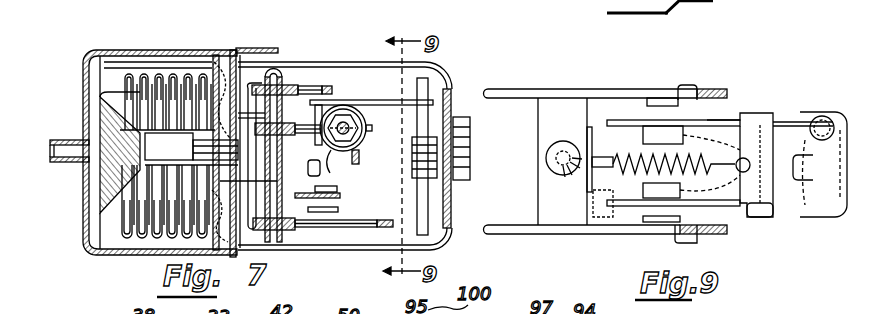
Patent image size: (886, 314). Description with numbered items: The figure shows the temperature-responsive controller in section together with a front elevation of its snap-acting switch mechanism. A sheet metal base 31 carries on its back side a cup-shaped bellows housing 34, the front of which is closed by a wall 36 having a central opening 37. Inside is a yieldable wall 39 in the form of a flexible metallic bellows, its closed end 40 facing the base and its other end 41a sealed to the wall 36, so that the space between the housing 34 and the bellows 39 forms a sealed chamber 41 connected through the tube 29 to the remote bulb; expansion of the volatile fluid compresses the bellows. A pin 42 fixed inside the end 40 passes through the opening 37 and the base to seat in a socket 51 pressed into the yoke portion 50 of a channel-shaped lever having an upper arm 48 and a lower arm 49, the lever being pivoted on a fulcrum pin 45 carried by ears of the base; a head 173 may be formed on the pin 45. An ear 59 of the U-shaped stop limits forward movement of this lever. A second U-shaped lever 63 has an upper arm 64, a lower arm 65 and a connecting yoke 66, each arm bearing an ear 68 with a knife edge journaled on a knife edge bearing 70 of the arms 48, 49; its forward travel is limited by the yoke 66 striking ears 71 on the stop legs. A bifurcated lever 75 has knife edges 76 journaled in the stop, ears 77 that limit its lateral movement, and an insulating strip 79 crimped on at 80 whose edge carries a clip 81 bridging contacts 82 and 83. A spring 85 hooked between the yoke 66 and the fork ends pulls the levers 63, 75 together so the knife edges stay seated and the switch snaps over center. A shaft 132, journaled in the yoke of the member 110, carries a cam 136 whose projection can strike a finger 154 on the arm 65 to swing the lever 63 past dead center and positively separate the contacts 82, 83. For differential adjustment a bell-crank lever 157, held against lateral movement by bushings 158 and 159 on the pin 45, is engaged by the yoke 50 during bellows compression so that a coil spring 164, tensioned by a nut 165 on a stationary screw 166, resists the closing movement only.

In FIG. 7, the tube 29 is at (58, 163).
In FIG. 7, the base 31 is at (234, 50).
In FIG. 7, the bellows housing 34 is at (100, 50).
In FIG. 7, the wall 36 is at (217, 55).
In FIG. 7, the central opening 37 is at (179, 147).
In FIG. 7, the yieldable wall 39 is at (126, 236).
In FIG. 7, the closed end 40 is at (100, 113).
In FIG. 7, the sealed chamber 41 is at (146, 236).
In FIG. 7, the sealed end 41a is at (199, 70).
In FIG. 7, the pin 42 is at (289, 136).
In FIG. 7, the fulcrum pin 45 is at (262, 180).
In FIG. 7, the upper arm 48 is at (310, 86).
In FIG. 9, the upper arm 48 is at (588, 92).
In FIG. 7, the lower arm 49 is at (300, 240).
In FIG. 9, the lower arm 49 is at (573, 234).
In FIG. 7, the yoke portion 50 is at (257, 88).
In FIG. 9, the yoke portion 50 is at (547, 98).
In FIG. 9, the socket 51 is at (549, 158).
In FIG. 7, the ear 59 is at (338, 197).
In FIG. 9, the lever 63 is at (538, 127).
In FIG. 7, the upper arm 64 is at (339, 211).
In FIG. 9, the upper arm 64 is at (656, 224).
In FIG. 7, the lower arm 65 is at (327, 102).
In FIG. 9, the lower arm 65 is at (667, 98).
In FIG. 9, the connecting yoke 66 is at (590, 196).
In FIG. 7, the ear 68 is at (333, 83).
In FIG. 9, the ear 68 is at (697, 88).
In FIG. 9, the knife edge bearing 70 is at (716, 87).
In FIG. 7, the ears 71 is at (338, 191).
In FIG. 9, the bifurcated lever 75 is at (752, 218).
In FIG. 9, the knife edges 76 is at (652, 126).
In FIG. 9, the ears 77 is at (648, 135).
In FIG. 9, the insulating strip 79 is at (790, 121).
In FIG. 9, the crimp 80 is at (755, 120).
In FIG. 9, the clip 81 is at (806, 180).
In FIG. 9, the contact 82 is at (826, 115).
In FIG. 9, the contact 83 is at (829, 220).
In FIG. 7, the spring 85 is at (316, 170).
In FIG. 9, the spring 85 is at (589, 128).
In FIG. 7, the member 110 is at (490, 265).
In FIG. 7, the shaft 132 is at (456, 186).
In FIG. 7, the cam 136 is at (423, 200).
In FIG. 7, the finger 154 is at (440, 93).
In FIG. 7, the bell-crank lever 157 is at (345, 160).
In FIG. 7, the bushing 158 is at (298, 84).
In FIG. 7, the bushing 159 is at (283, 235).
In FIG. 7, the coil spring 164 is at (360, 113).
In FIG. 7, the nut 165 is at (357, 156).
In FIG. 7, the stationary screw 166 is at (353, 139).
In FIG. 7, the head 173 is at (274, 68).